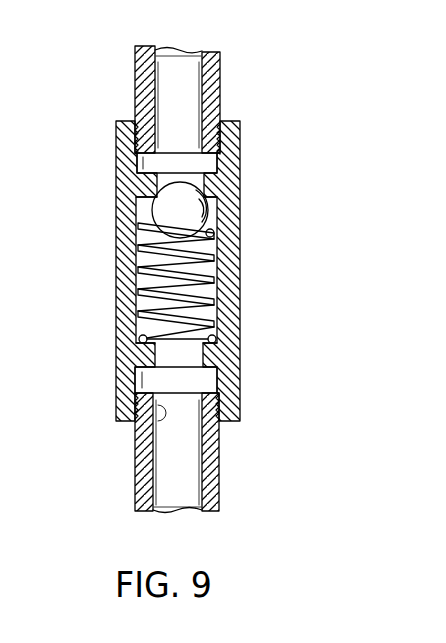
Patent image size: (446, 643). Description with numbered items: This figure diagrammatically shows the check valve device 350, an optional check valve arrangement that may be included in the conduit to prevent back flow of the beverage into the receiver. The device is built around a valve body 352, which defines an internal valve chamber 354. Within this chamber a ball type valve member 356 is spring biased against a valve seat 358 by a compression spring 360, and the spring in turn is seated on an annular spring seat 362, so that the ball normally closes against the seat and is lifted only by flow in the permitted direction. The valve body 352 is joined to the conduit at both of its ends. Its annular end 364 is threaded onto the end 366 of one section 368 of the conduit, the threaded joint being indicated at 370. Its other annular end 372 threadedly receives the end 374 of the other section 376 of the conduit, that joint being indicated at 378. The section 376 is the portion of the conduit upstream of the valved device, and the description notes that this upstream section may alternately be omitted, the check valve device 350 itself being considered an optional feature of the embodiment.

The check valve device 350 is at (256, 282).
The valve body 352 is at (233, 232).
The valve chamber 354 is at (212, 303).
The ball type valve member 356 is at (200, 210).
The valve seat 358 is at (155, 194).
The compression spring 360 is at (150, 280).
The annular spring seat 362 is at (216, 333).
The annular end 364 is at (233, 137).
The end 366 is at (215, 88).
The section 368 is at (207, 52).
The threaded connection 370 is at (138, 130).
The other annular end 372 is at (240, 400).
The end 374 is at (218, 458).
The section 376 is at (218, 503).
The threaded connection 378 is at (155, 413).